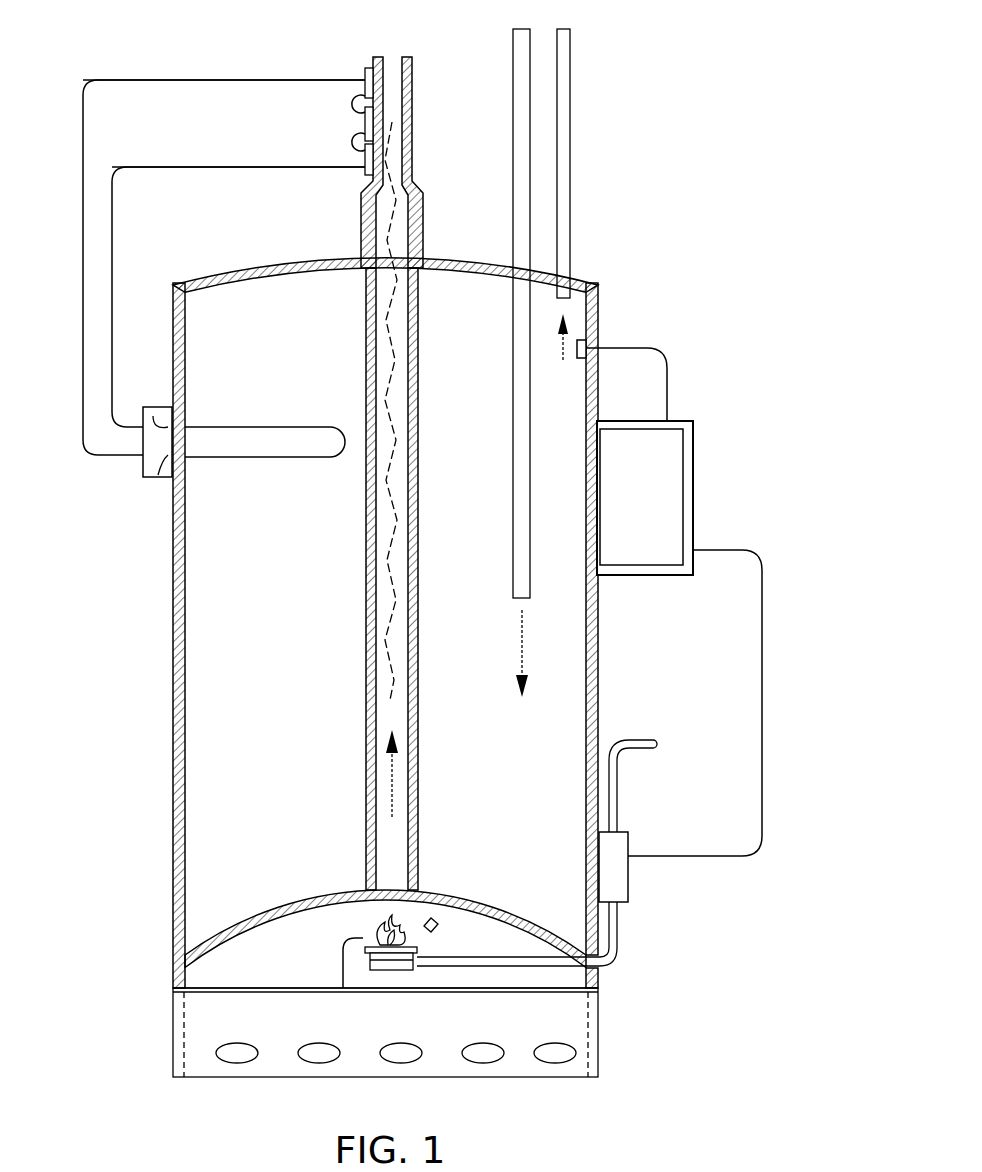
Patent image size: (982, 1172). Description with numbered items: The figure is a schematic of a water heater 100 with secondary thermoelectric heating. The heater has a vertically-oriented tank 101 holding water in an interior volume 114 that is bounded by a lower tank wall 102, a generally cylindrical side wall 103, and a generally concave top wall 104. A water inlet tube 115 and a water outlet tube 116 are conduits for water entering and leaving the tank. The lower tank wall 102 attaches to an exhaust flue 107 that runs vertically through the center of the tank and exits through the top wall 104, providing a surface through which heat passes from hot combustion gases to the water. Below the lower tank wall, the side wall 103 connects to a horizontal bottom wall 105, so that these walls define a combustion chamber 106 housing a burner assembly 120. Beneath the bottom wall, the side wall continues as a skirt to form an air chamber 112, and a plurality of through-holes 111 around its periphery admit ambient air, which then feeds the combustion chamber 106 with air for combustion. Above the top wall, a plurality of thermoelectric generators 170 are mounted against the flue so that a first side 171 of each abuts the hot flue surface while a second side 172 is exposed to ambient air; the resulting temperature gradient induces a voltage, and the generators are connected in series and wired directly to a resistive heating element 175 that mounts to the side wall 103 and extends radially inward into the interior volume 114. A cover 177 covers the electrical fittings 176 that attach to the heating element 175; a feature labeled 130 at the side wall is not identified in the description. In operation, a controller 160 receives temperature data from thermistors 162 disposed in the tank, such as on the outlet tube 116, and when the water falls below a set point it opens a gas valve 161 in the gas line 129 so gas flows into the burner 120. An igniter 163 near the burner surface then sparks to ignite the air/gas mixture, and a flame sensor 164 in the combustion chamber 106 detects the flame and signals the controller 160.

The water heater 100 is at (735, 100).
The tank 101 is at (172, 612).
The lower tank wall 102 is at (257, 910).
The side wall 103 is at (172, 760).
The top wall 104 is at (272, 262).
The bottom wall 105 is at (212, 992).
The combustion chamber 106 is at (216, 975).
The exhaust flue 107 is at (366, 585).
The through-holes 111 is at (578, 1057).
The air chamber 112 is at (545, 1024).
The interior volume 114 is at (251, 695).
The water inlet tube 115 is at (513, 80).
The water outlet tube 116 is at (571, 64).
The burner assembly 120 is at (417, 950).
The gas line 129 is at (617, 965).
The opening in tank wall 130 is at (178, 415).
The controller 160 is at (695, 495).
The gas valve 161 is at (630, 885).
The thermistors 162 is at (590, 348).
The igniter 163 is at (434, 920).
The flame sensor 164 is at (343, 975).
The thermoelectric generators 170 is at (367, 70).
The first side 171 is at (384, 74).
The second side 172 is at (356, 88).
The resistive heating element 175 is at (316, 427).
The electrical fittings 176 is at (163, 460).
The cover 177 is at (150, 407).